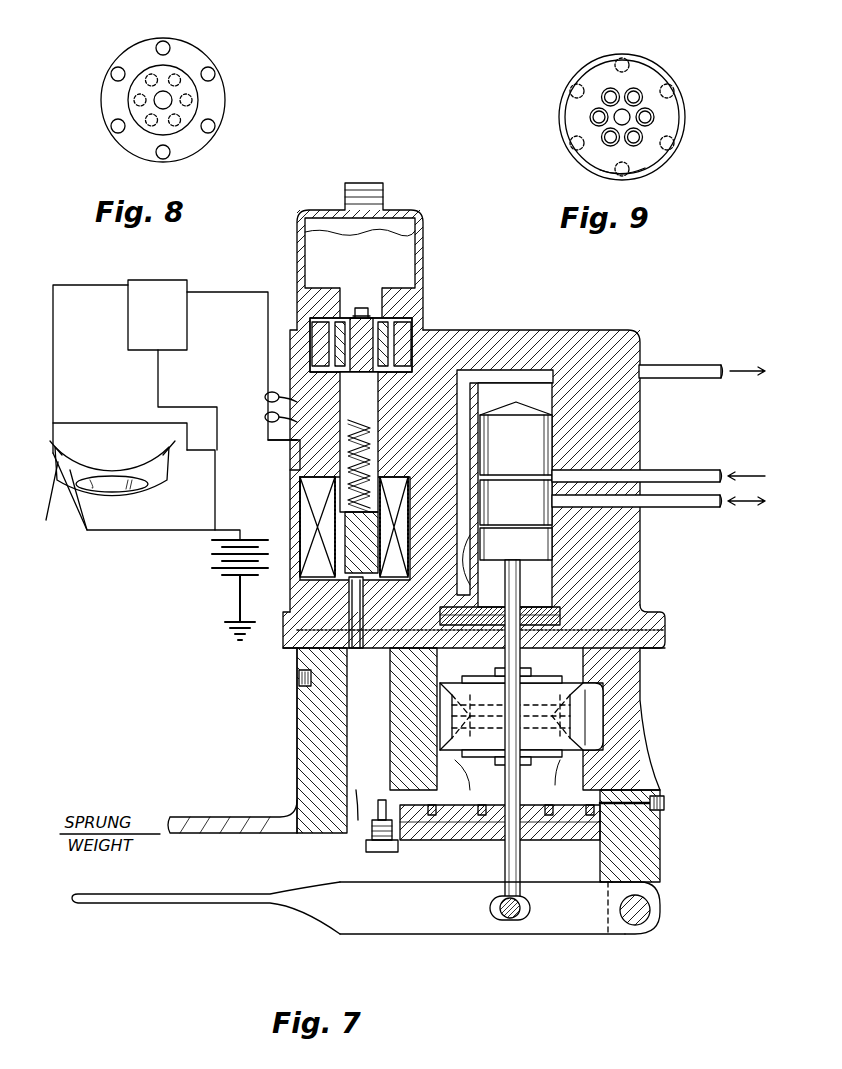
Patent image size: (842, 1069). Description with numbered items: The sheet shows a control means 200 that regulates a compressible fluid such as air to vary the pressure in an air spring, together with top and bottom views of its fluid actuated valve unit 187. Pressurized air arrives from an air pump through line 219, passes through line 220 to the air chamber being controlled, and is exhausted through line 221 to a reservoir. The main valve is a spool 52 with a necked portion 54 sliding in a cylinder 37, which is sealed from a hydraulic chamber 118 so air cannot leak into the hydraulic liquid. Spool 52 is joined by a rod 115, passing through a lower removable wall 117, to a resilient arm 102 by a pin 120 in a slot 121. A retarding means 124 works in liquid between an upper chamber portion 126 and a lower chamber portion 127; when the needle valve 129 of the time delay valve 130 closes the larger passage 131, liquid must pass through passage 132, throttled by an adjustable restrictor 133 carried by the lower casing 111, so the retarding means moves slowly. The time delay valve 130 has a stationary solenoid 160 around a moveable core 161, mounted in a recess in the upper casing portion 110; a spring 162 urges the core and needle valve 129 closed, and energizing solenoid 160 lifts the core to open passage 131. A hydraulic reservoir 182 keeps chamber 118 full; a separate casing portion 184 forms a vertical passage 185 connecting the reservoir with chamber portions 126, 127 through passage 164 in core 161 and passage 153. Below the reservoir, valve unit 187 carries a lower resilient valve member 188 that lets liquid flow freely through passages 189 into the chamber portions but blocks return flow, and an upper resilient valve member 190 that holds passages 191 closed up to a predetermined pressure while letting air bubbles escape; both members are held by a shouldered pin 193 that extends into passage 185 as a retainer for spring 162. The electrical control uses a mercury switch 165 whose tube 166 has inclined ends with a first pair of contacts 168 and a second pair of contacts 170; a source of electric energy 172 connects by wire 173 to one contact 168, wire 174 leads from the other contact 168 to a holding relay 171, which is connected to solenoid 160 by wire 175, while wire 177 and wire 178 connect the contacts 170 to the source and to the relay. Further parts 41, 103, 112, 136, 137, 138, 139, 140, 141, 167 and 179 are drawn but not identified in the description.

In FIG. 8, the fluid actuated valve unit 187 is at (204, 46).
In FIG. 9, the fluid actuated valve unit 187 is at (664, 76).
In FIG. 7, the fluid actuated valve unit 187 is at (413, 340).
In FIG. 9, the lower resilient valve member 188 is at (645, 160).
In FIG. 7, the lower resilient valve member 188 is at (352, 374).
In FIG. 8, the passages 189 is at (118, 72).
In FIG. 9, the passages 189 is at (572, 90).
In FIG. 7, the passages 189 is at (314, 344).
In FIG. 8, the upper resilient valve member 190 is at (192, 114).
In FIG. 7, the upper resilient valve member 190 is at (368, 308).
In FIG. 8, the passages 191 is at (150, 126).
In FIG. 9, the passages 191 is at (598, 117).
In FIG. 7, the passages 191 is at (342, 336).
In FIG. 8, the shouldered pin 193 is at (172, 99).
In FIG. 9, the shouldered pin 193 is at (630, 112).
In FIG. 7, the shouldered pin 193 is at (353, 390).
In FIG. 7, the hydraulic reservoir 182 is at (375, 242).
In FIG. 7, the casing portion 184 is at (440, 358).
In FIG. 7, the cylinder 37 is at (492, 380).
In FIG. 7, the passage 41 is at (466, 540).
In FIG. 7, the spool 52 is at (515, 495).
In FIG. 7, the necked portion 54 is at (516, 520).
In FIG. 7, the control means 200 is at (646, 335).
In FIG. 7, the line 221 is at (655, 372).
In FIG. 7, the line 219 is at (652, 476).
In FIG. 7, the line 220 is at (652, 506).
In FIG. 7, the upper casing portion 110 is at (642, 602).
In FIG. 7, the gasket line 112 is at (660, 624).
In FIG. 7, the lower casing 111 is at (655, 642).
In FIG. 7, the upper chamber portion 126 is at (590, 656).
In FIG. 7, the spool 140 is at (600, 700).
In FIG. 7, the spool core 138 is at (560, 712).
In FIG. 7, the retarding means 124 is at (584, 742).
In FIG. 7, the lower chamber portion 127 is at (635, 790).
In FIG. 7, the upper disc 136 is at (478, 680).
In FIG. 7, the upper disc 137 is at (562, 690).
In FIG. 7, the lower disc 141 is at (476, 758).
In FIG. 7, the lower disc 139 is at (534, 760).
In FIG. 7, the rod 115 is at (522, 882).
In FIG. 7, the lower removable wall 117 is at (445, 822).
In FIG. 7, the chamber 118 is at (492, 822).
In FIG. 7, the passage 131 is at (348, 720).
In FIG. 7, the passage 132 is at (390, 760).
In FIG. 7, the needle valve 129 is at (345, 642).
In FIG. 7, the restrictor 133 is at (376, 832).
In FIG. 7, the passage 153 is at (340, 620).
In FIG. 7, the moveable core 161 is at (345, 560).
In FIG. 7, the solenoid 160 is at (300, 488).
In FIG. 7, the passage 164 is at (310, 532).
In FIG. 7, the time delay valve 130 is at (299, 515).
In FIG. 7, the spring 162 is at (265, 400).
In FIG. 7, the vertical passage 185 is at (297, 438).
In FIG. 7, the holding relay 171 is at (157, 315).
In FIG. 7, the wire 175 is at (266, 292).
In FIG. 7, the wire 179 is at (156, 365).
In FIG. 7, the wire 178 is at (104, 422).
In FIG. 7, the wire 177 is at (210, 445).
In FIG. 7, the wire 174 is at (60, 447).
In FIG. 7, the second pair of contacts 170 is at (168, 458).
In FIG. 7, the mercury switch 165 is at (113, 470).
In FIG. 7, the mercury 167 is at (124, 490).
In FIG. 7, the first pair of contacts 168 is at (58, 464).
In FIG. 7, the tube 166 is at (74, 478).
In FIG. 7, the wire 173 is at (140, 531).
In FIG. 7, the source of electric energy 172 is at (222, 572).
In FIG. 7, the resilient arm 102 is at (412, 915).
In FIG. 7, the pivot pin 103 is at (652, 918).
In FIG. 7, the pin 120 is at (528, 914).
In FIG. 7, the slot 121 is at (505, 920).